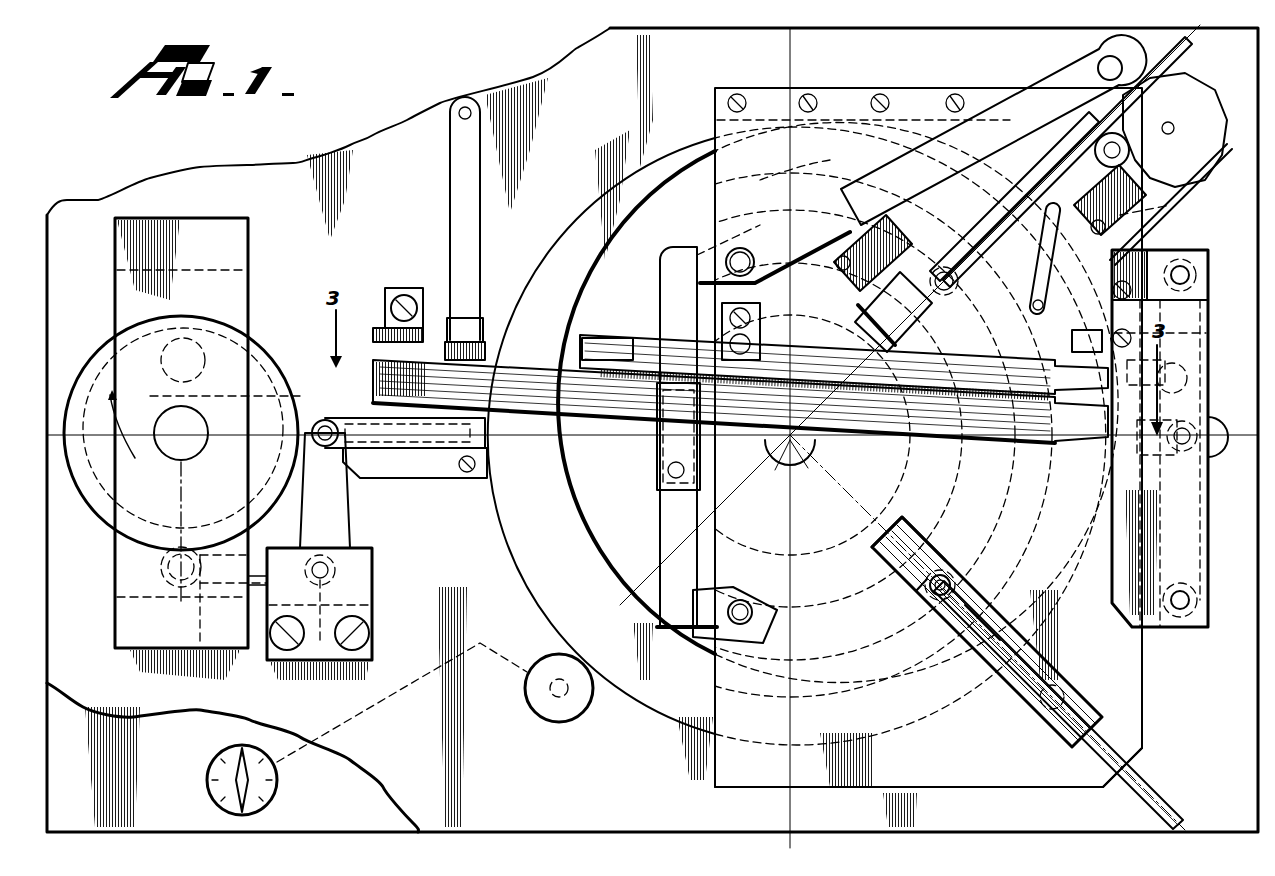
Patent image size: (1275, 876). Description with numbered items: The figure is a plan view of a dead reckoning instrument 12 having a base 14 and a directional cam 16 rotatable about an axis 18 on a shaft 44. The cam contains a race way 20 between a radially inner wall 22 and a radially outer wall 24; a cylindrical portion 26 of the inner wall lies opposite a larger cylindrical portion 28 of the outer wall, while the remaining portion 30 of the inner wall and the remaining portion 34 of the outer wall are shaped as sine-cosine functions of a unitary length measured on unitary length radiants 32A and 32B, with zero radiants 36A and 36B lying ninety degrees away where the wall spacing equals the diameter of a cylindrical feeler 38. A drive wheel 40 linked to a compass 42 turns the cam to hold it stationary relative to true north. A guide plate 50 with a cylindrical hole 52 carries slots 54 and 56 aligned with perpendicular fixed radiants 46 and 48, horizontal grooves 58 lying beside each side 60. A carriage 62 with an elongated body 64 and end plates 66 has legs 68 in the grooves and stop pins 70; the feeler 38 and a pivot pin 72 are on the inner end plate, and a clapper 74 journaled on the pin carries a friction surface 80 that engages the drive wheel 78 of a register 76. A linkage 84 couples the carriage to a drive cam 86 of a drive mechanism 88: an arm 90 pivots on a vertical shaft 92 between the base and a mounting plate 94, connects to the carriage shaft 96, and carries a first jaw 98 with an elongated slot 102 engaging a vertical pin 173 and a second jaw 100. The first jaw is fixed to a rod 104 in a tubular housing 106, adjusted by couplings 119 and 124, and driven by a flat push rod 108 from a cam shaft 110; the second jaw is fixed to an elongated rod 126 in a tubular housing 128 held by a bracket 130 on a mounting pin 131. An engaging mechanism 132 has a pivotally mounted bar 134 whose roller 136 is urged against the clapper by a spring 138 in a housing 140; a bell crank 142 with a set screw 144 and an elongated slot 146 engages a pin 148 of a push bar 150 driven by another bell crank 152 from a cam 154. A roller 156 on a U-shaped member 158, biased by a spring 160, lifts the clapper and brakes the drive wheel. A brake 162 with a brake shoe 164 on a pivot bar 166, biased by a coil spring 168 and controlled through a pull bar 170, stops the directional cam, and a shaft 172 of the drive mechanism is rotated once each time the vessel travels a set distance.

The dead reckoning instrument 12 is at (662, 115).
The base 14 is at (458, 574).
The directional cam 16 is at (566, 224).
The axis 18 is at (803, 484).
The race way 20 is at (618, 540).
The radially inner wall 22 is at (598, 458).
The radially outer wall 24 is at (585, 495).
The portion of the inner wall 26 is at (616, 322).
The portion of the outer wall 28 is at (612, 571).
The remaining portion of the inner wall 30 is at (622, 498).
The unitary length radiant 32A is at (790, 45).
The unitary length radiant 32B is at (790, 678).
The remaining portion of the outer wall 34 is at (648, 226).
The zero radiant 36A is at (740, 401).
The zero radiant 36B is at (942, 440).
The cylindrical feeler 38 is at (893, 312).
The drive wheel 40 is at (530, 705).
The compass 42 is at (278, 780).
The shaft 44 is at (788, 492).
The fixed radiant 46 is at (830, 406).
The fixed radiant 48 is at (845, 492).
The guide plate 50 is at (856, 724).
The cylindrical hole 52 is at (762, 486).
The slot 54 is at (1030, 295).
The slot 56 is at (862, 562).
The horizontal grooves 58 is at (860, 592).
The side of the slot 60 is at (875, 533).
The carriage 62 is at (965, 655).
The elongated body 64 is at (975, 660).
The end plates 66 is at (940, 520).
The legs 68 is at (995, 720).
The stop pins 70 is at (950, 578).
The pivot pin 72 is at (960, 582).
The clapper 74 is at (1190, 42).
The register 76 is at (1228, 100).
The drive wheel 78 is at (1218, 150).
The friction surface 80 is at (1185, 80).
The linkage 84 is at (1097, 343).
The drive cam 86 is at (258, 318).
The drive mechanism 88 is at (138, 212).
The arm 90 is at (1144, 650).
The vertical shaft 92 is at (1180, 620).
The mounting plate 94 is at (1182, 565).
The shaft 96 is at (1110, 612).
The first jaw 98 is at (1212, 424).
The second jaw 100 is at (1105, 404).
The elongated slot 102 is at (1195, 468).
The rod 104 is at (1098, 476).
The tubular housing 106 is at (557, 375).
The flat push rod 108 is at (274, 348).
The cam shaft 110 is at (112, 352).
The coupling 119 is at (1056, 446).
The coupling 124 is at (380, 337).
The elongated rod 126 is at (1074, 360).
The tubular housing 128 is at (640, 330).
The bracket 130 is at (762, 334).
The mounting pin 131 is at (736, 302).
The engaging mechanism 132 is at (838, 145).
The pivotally mounted bar 134 is at (908, 162).
The roller 136 is at (1085, 60).
The spring 138 is at (880, 249).
The housing 140 is at (858, 308).
The bell crank 142 is at (692, 245).
The set screw 144 is at (812, 172).
The elongated slot 146 is at (657, 474).
The pin 148 is at (705, 482).
The push bar 150 is at (368, 414).
The bell crank 152 is at (325, 512).
The cam 154 is at (222, 512).
The roller 156 is at (1130, 148).
The U-shaped pivotable member 158 is at (1160, 236).
The spring 160 is at (1178, 210).
The brake 162 is at (418, 284).
The brake shoe 164 is at (435, 479).
The pivot bar 166 is at (468, 163).
The coil spring 168 is at (388, 318).
The pull bar 170 is at (375, 473).
The shaft 172 is at (215, 420).
The vertical pin 173 is at (1190, 384).